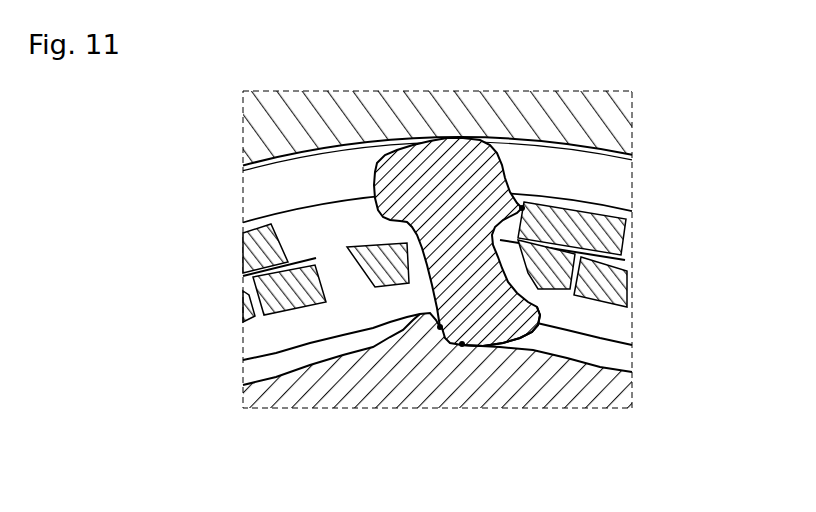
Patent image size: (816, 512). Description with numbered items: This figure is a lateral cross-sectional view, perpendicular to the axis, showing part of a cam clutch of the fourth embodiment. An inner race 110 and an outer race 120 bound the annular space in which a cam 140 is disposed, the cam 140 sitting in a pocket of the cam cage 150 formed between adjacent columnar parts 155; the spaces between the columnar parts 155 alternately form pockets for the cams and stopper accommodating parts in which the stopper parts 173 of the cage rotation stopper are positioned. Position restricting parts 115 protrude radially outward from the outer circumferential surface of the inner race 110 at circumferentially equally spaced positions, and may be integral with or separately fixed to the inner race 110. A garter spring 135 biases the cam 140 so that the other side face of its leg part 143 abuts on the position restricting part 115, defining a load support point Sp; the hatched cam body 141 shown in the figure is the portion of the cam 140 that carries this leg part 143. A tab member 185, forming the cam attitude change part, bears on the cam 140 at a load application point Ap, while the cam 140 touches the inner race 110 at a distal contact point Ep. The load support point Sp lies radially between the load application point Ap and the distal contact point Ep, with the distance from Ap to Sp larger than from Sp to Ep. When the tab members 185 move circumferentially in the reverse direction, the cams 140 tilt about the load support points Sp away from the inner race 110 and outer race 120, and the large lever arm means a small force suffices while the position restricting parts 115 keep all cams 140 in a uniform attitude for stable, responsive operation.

The inner race 110 is at (342, 408).
The position restricting part 115 is at (395, 326).
The outer race 120 is at (372, 100).
The garter spring 135 is at (263, 196).
The cam 140 is at (376, 217).
The plug (filling portion) 141 is at (423, 153).
The leg part 143 is at (512, 330).
The cam cage 150 is at (365, 277).
The columnar part 155 is at (556, 292).
The stopper part 173 is at (608, 280).
The tab member 185 is at (608, 230).
The load application point Ap is at (522, 207).
The load support point Sp is at (440, 333).
The distal contact point Ep is at (462, 348).